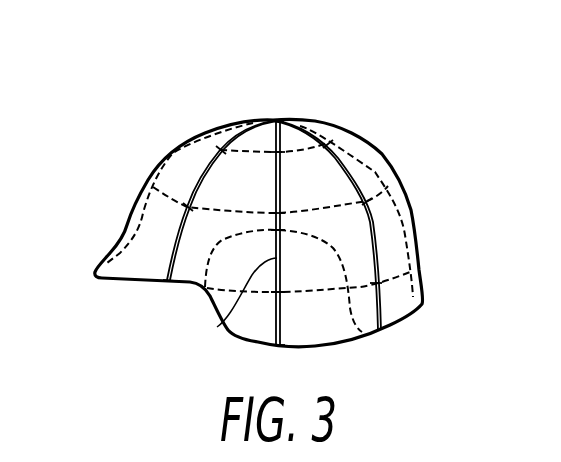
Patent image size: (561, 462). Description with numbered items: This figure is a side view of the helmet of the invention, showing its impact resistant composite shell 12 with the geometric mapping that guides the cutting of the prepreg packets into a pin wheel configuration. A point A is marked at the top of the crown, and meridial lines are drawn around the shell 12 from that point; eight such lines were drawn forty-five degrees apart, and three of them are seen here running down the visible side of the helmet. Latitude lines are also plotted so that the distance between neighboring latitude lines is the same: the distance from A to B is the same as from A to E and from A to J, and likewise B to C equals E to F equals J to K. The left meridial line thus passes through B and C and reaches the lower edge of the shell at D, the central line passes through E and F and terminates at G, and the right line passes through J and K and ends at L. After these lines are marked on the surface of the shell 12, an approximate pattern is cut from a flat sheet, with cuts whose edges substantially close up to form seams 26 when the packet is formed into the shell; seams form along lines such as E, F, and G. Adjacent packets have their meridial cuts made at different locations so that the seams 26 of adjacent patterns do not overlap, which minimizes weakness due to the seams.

The impact resistant composite shell 12 is at (377, 152).
The seams 26 is at (217, 327).
The point A is at (275, 106).
The point B is at (220, 162).
The point C is at (190, 215).
The point D is at (163, 295).
The point E is at (283, 164).
The point F is at (285, 198).
The point G is at (278, 359).
The point J is at (323, 158).
The point K is at (375, 210).
The point L is at (384, 299).